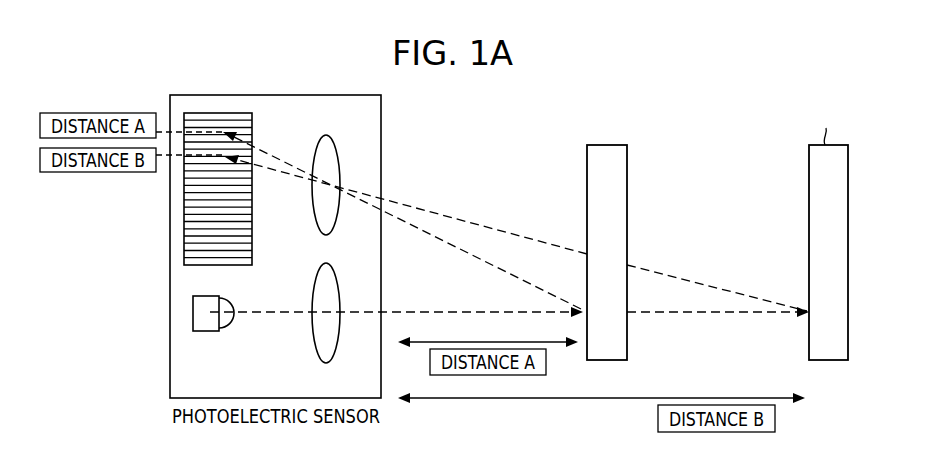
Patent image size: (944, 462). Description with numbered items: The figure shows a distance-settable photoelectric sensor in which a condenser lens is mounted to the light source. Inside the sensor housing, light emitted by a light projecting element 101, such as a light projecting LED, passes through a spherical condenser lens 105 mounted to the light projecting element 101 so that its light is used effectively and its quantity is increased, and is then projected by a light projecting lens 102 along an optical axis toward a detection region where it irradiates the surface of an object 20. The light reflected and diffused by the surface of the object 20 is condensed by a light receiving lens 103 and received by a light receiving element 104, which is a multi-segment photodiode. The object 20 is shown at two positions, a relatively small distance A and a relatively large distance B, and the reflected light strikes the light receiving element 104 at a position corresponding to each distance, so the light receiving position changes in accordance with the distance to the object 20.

The object 20 is at (603, 145).
The light projecting element 101 is at (206, 332).
The light projecting lens 102 is at (339, 340).
The light receiving lens 103 is at (327, 136).
The light receiving element 104 is at (252, 117).
The spherical condenser lens 105 is at (230, 301).